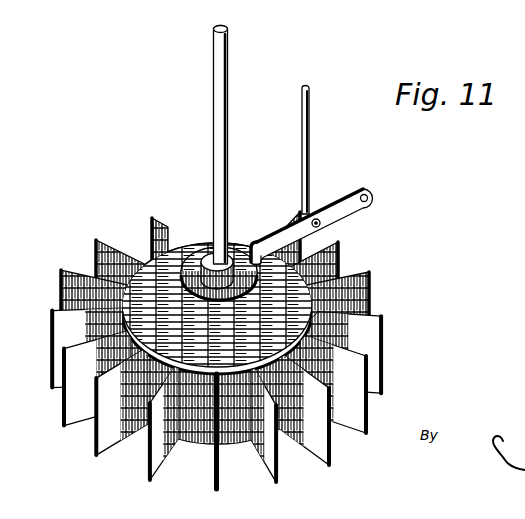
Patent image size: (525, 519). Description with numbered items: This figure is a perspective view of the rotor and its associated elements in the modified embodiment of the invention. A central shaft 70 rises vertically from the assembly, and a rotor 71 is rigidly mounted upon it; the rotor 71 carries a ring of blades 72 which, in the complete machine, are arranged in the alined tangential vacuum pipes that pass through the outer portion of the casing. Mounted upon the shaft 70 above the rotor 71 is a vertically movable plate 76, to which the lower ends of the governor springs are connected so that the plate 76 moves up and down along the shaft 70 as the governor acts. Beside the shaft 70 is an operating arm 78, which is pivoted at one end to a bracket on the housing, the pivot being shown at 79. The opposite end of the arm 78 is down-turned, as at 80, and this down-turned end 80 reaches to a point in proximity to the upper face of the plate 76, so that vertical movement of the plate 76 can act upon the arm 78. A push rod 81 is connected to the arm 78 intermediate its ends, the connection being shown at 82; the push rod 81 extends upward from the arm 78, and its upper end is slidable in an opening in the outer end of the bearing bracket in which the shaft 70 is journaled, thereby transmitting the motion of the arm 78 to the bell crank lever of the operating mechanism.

The shaft 70 is at (212, 86).
The rotor 71 is at (222, 357).
The blades 72 is at (78, 244).
The vertically movable plate 76 is at (237, 255).
The operating arm 78 is at (340, 203).
The pivot 79 is at (369, 202).
The down-turned end 80 is at (260, 240).
The push rod 81 is at (311, 127).
The connection 82 is at (322, 225).